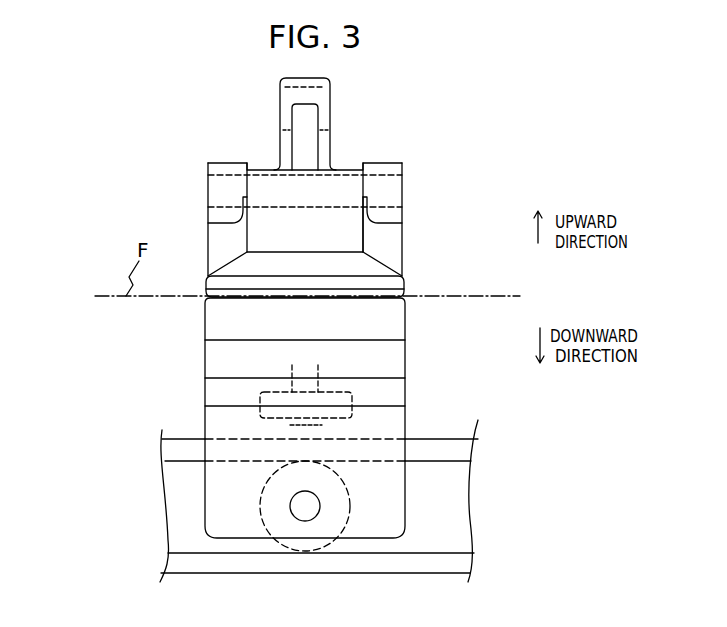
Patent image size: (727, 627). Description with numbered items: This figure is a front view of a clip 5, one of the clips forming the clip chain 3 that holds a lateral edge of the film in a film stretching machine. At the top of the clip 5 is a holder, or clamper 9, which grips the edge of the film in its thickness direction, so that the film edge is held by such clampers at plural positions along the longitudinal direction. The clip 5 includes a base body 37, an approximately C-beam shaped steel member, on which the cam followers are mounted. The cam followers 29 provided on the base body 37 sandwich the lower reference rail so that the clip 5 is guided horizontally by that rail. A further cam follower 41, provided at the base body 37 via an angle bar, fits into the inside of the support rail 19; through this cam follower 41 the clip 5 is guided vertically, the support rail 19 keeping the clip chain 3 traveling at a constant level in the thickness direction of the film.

The clip chain 3 is at (413, 110).
The clip 5 is at (407, 322).
The holder (clamper) 9 is at (363, 237).
The support rail 19 is at (185, 510).
The cam follower 29 is at (352, 401).
The base body 37 is at (206, 317).
The cam follower 41 is at (350, 490).